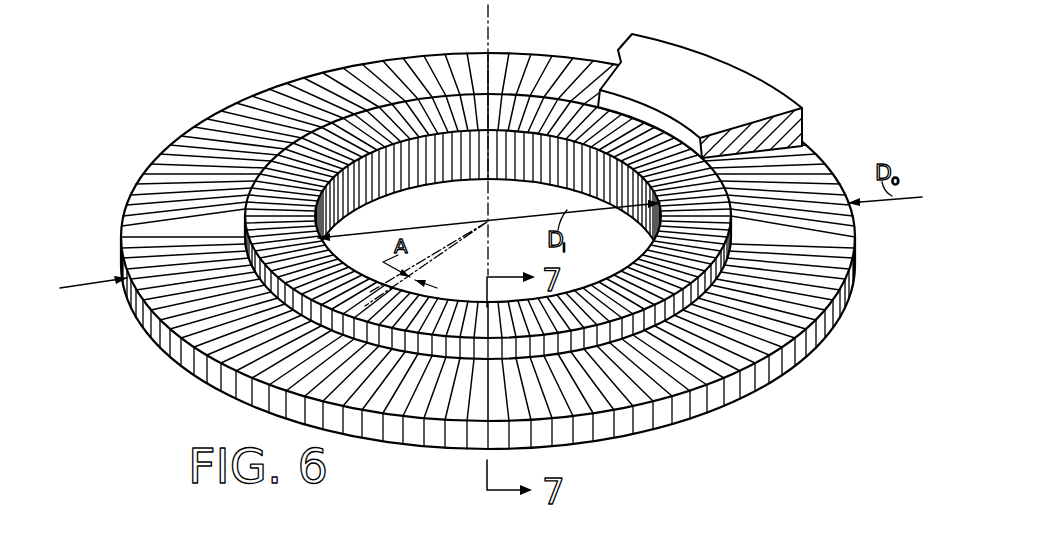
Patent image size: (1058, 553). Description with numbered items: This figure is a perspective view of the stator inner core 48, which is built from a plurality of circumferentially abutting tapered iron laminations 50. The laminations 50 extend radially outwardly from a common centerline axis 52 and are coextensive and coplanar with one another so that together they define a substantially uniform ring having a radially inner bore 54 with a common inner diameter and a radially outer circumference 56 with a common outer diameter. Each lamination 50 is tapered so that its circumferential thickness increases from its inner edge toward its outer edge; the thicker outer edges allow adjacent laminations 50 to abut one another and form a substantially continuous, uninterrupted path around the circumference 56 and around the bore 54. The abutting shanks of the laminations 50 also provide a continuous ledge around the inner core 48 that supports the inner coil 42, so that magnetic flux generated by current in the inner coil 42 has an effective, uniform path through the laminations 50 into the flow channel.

The inner coil 42 is at (747, 70).
The stator inner core 48 is at (335, 68).
The tapered iron laminations 50 is at (197, 127).
The common centerline axis 52 is at (486, 196).
The radially inner bore 54 is at (637, 215).
The radially outer circumference 56 is at (170, 345).